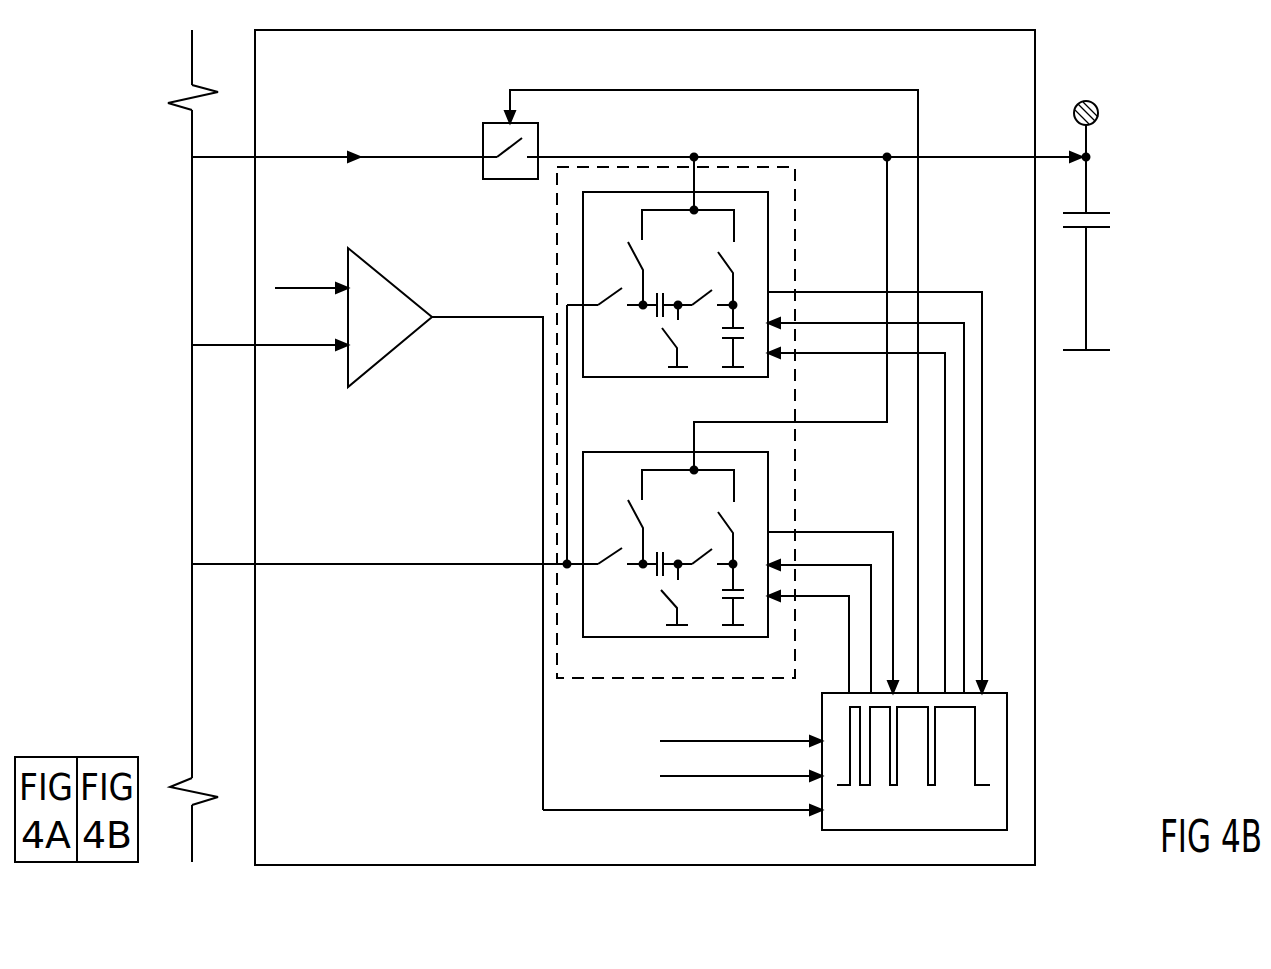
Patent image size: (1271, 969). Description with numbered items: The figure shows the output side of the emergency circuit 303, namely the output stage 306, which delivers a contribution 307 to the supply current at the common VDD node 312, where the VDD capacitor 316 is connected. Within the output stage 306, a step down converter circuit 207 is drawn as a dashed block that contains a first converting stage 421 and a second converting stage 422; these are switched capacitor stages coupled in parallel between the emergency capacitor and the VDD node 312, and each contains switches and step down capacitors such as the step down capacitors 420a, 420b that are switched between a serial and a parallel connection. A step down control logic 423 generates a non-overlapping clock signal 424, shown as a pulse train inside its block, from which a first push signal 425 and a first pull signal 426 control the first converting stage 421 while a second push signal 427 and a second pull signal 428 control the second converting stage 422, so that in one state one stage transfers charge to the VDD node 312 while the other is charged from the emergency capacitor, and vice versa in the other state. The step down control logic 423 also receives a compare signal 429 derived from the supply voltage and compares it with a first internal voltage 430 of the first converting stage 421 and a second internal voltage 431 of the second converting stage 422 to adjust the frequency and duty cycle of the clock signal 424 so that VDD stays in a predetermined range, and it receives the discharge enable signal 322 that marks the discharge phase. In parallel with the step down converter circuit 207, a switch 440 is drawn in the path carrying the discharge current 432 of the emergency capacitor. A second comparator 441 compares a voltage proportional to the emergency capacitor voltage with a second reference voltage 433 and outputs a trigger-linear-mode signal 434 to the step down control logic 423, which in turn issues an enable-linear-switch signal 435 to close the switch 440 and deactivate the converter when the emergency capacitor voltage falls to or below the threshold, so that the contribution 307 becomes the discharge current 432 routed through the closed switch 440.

The emergency circuit 303 is at (1190, 66).
The output stage 306 is at (255, 708).
The contribution to the supply current 307 is at (950, 157).
The common VDD node 312 is at (1098, 113).
The VDD capacitor 316 is at (1088, 210).
The discharge enable signal 322 is at (660, 775).
The step down capacitor 420a is at (672, 553).
The step down capacitor 420b is at (760, 602).
The first converting stage 421 is at (647, 451).
The second converting stage 422 is at (768, 239).
The step down control logic 423 is at (1007, 790).
The non-overlapping clock signal 424 is at (965, 785).
The first push signal 425 is at (850, 612).
The first pull signal 426 is at (850, 562).
The second push signal 427 is at (945, 543).
The second pull signal 428 is at (963, 335).
The compare signal 429 is at (800, 738).
The first internal voltage 430 is at (783, 530).
The second internal voltage 431 is at (948, 292).
The discharge current 432 is at (282, 157).
The second reference voltage 433 is at (307, 285).
The trigger-linear-mode signal 434 is at (642, 812).
The enable-linear-switch signal 435 is at (838, 90).
The switch 440 is at (540, 147).
The second comparator 441 is at (413, 297).
The step down converter circuit 207 is at (594, 678).